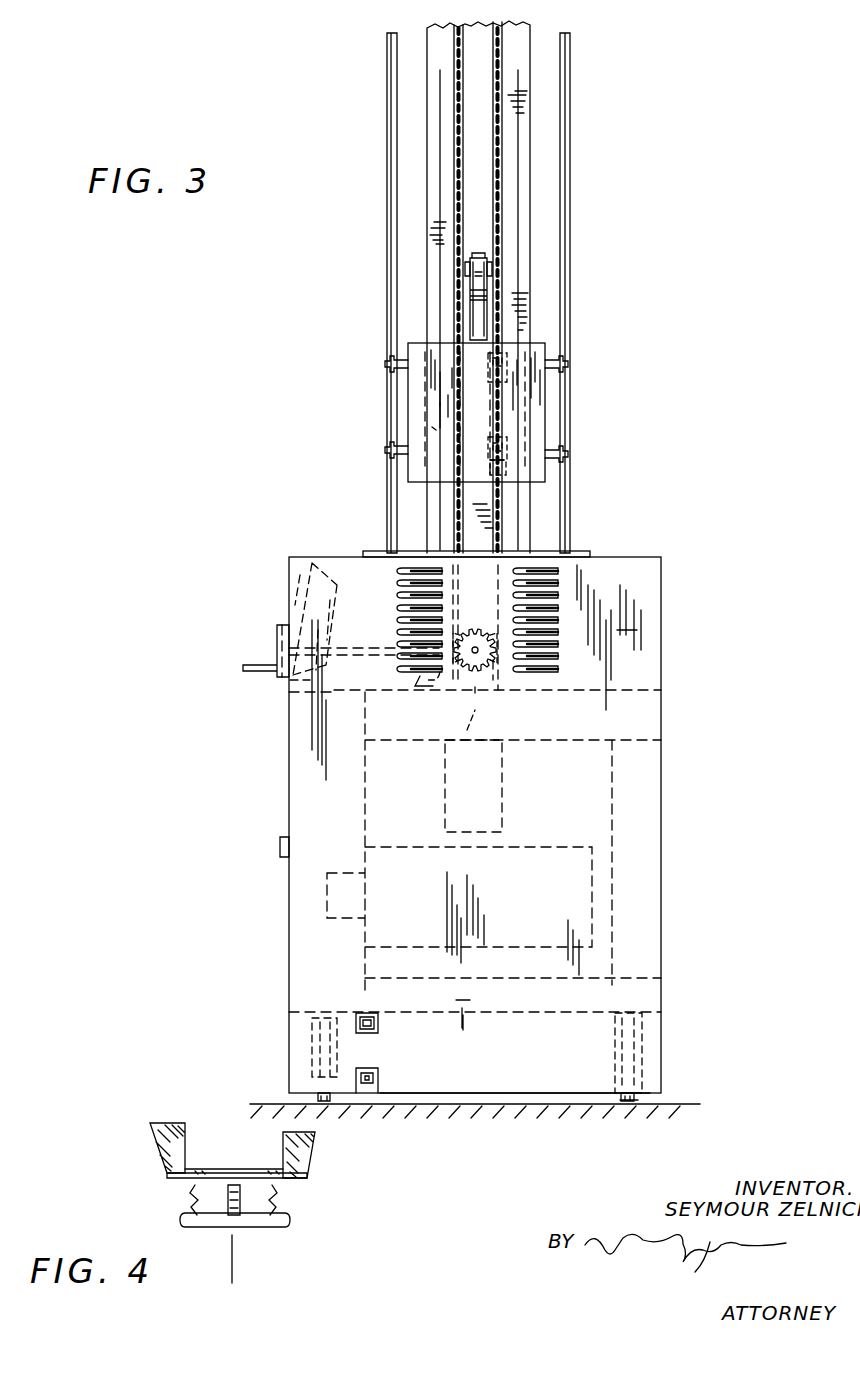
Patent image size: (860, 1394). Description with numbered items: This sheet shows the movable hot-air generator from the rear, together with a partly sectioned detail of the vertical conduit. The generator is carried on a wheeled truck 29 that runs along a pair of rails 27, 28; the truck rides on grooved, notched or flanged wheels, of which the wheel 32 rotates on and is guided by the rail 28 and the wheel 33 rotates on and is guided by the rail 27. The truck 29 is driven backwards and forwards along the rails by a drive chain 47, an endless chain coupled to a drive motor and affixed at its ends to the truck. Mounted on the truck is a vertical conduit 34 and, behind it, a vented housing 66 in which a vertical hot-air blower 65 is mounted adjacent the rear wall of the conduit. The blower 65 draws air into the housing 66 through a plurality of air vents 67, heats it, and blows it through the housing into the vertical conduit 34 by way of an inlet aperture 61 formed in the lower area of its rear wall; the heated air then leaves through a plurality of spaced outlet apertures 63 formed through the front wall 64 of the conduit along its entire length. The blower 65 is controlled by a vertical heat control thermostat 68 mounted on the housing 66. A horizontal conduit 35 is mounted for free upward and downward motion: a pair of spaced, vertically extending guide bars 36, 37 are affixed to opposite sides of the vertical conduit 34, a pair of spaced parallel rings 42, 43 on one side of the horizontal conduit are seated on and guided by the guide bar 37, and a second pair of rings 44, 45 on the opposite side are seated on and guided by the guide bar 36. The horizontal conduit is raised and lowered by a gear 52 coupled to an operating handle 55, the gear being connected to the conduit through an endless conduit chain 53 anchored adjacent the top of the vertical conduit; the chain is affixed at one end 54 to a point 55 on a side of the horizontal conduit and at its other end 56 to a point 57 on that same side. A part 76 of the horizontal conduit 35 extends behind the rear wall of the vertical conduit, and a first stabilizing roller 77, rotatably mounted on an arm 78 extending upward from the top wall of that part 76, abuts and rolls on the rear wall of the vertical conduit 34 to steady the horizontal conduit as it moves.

In FIG. 3, the rail 27 is at (628, 1104).
In FIG. 3, the rail 28 is at (332, 1104).
In FIG. 3, the wheeled truck 29 is at (482, 1091).
In FIG. 3, the wheel 32 is at (312, 1058).
In FIG. 3, the wheel 33 is at (650, 1055).
In FIG. 3, the vertical conduit 34 is at (525, 138).
In FIG. 3, the horizontal conduit 35 is at (525, 408).
In FIG. 4, the horizontal conduit 35 is at (176, 1124).
In FIG. 3, the guide bar 36 is at (570, 293).
In FIG. 3, the guide bar 37 is at (387, 291).
In FIG. 3, the ring 42 is at (385, 368).
In FIG. 3, the ring 43 is at (385, 454).
In FIG. 3, the ring 44 is at (568, 366).
In FIG. 3, the ring 45 is at (568, 460).
In FIG. 3, the drive chain 47 is at (364, 1032).
In FIG. 3, the gear 52 is at (459, 702).
In FIG. 3, the conduit chain 53 is at (495, 68).
In FIG. 3, the end of conduit chain 54 is at (505, 352).
In FIG. 3, the operating handle 55 is at (265, 678).
In FIG. 3, the end of conduit chain 56 is at (488, 477).
In FIG. 3, the point on horizontal conduit 57 is at (506, 441).
In FIG. 3, the inlet aperture 61 is at (502, 792).
In FIG. 4, the outlet apertures 63 is at (240, 1170).
In FIG. 4, the front wall 64 is at (170, 1180).
In FIG. 3, the vertical hot-air blower 65 is at (493, 610).
In FIG. 3, the vented housing 66 is at (661, 800).
In FIG. 3, the air vents 67 is at (592, 551).
In FIG. 3, the vertical heat control thermostat 68 is at (289, 603).
In FIG. 3, the part of horizontal conduit 76 is at (437, 425).
In FIG. 3, the first stabilizing roller 77 is at (474, 252).
In FIG. 3, the arm 78 is at (490, 268).